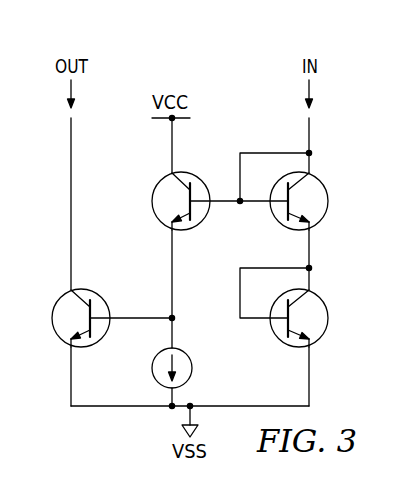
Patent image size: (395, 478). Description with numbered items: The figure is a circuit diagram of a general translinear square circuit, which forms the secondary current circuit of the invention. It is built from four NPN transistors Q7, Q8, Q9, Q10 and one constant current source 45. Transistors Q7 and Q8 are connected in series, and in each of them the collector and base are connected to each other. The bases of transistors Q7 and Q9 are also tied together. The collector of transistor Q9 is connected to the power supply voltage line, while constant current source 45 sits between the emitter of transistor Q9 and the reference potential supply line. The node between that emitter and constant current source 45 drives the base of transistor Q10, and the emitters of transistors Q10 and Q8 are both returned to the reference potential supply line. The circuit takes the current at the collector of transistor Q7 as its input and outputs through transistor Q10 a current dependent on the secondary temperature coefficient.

The transistor Q7 is at (299, 214).
The transistor Q8 is at (299, 331).
The transistor Q9 is at (181, 214).
The transistor Q10 is at (82, 331).
The constant current source 45 is at (192, 368).